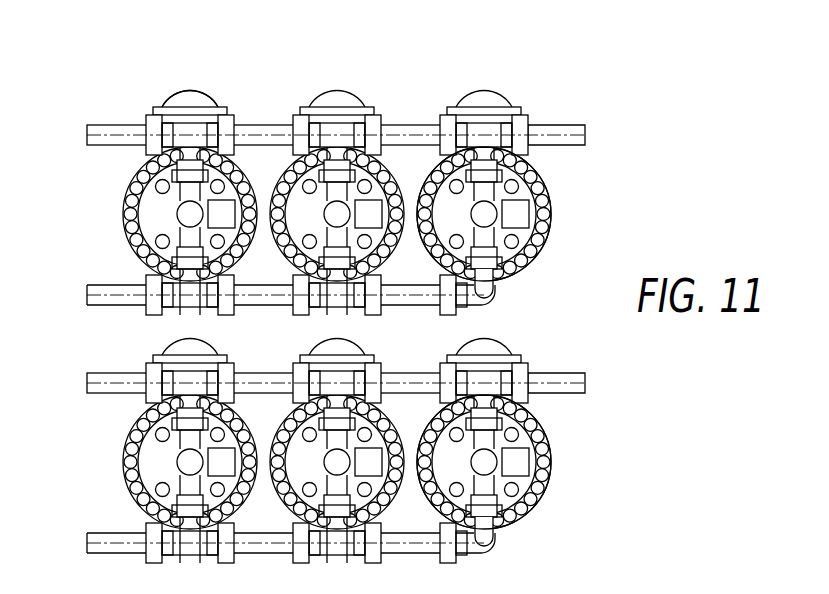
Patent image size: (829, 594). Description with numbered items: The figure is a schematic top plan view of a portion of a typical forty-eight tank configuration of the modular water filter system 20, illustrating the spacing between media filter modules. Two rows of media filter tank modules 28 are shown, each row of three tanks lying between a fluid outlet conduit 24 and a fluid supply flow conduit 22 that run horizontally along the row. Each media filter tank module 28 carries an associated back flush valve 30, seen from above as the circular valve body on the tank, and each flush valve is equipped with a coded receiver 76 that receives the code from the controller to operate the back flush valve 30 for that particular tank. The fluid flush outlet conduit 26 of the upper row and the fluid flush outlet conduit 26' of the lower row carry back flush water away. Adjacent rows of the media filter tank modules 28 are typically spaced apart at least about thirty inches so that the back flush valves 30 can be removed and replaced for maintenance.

The modular water filter system 20 is at (352, 300).
The fluid supply flow conduit 22 is at (87, 296).
The fluid outlet conduit 24 is at (87, 133).
The fluid flush outlet conduit 26 is at (556, 100).
The fluid flush outlet conduit 26' is at (567, 358).
The media filter tank module 28 is at (107, 215).
The back flush valve 30 is at (548, 220).
The receiver 76 is at (142, 84).